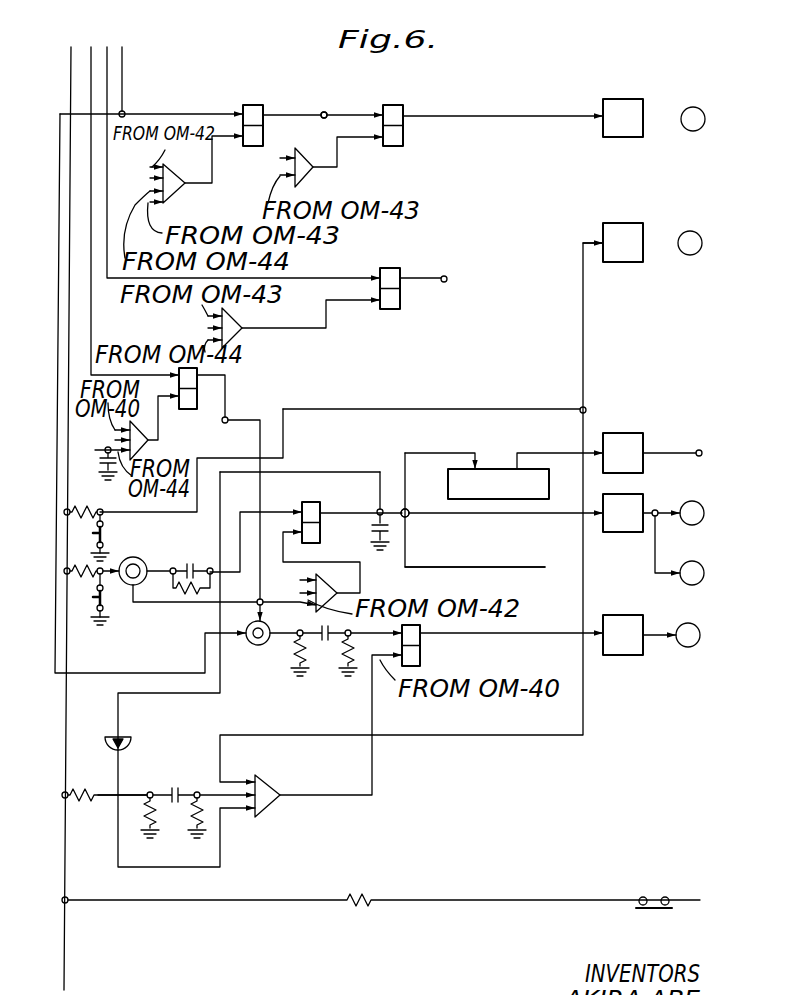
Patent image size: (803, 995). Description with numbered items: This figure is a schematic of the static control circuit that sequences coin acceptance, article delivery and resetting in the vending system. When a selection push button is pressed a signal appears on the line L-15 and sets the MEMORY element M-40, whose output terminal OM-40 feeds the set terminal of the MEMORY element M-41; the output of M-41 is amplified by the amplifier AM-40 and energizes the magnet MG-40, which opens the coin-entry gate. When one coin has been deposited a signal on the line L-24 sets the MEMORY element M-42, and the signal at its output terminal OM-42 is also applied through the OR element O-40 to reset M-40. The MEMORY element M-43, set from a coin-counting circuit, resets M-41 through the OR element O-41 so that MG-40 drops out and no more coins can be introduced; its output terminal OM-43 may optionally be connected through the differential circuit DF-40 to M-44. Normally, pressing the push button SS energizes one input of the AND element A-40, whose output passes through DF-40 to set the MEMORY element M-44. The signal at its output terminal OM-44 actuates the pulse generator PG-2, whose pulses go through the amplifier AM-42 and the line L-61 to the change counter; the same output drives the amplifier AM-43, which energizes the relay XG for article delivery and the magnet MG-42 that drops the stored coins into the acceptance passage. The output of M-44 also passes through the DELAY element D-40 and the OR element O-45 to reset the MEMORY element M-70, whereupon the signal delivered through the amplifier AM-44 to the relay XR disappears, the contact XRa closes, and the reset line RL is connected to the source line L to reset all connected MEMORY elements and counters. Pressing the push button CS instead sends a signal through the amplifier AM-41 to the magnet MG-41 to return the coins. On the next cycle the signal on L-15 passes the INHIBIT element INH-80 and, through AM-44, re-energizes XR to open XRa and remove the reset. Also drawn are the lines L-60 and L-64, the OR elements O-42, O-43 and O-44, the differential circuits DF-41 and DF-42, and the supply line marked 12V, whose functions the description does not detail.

The line L-60 is at (91, 70).
The line L-15 is at (122, 77).
The line L-24 is at (107, 100).
The source line L is at (71, 92).
The MEMORY element M-40 is at (272, 88).
The output of memory M-40 OM-40 is at (326, 111).
The MEMORY element M-41 is at (403, 137).
The OR element O-40 is at (200, 198).
The OR element O-41 is at (306, 178).
The amplifier AM-40 is at (626, 88).
The magnet MG-40 is at (690, 106).
The amplifier AM-41 is at (626, 212).
The magnet MG-41 is at (688, 231).
The MEMORY element M-42 is at (410, 258).
The output terminal OM-42 is at (447, 279).
The gate O-42 is at (235, 338).
The MEMORY element M-43 is at (185, 410).
The output terminal OM-43 is at (227, 417).
The gate O-43 is at (140, 450).
The MEMORY element M-44 is at (345, 498).
The output terminal OM-44 is at (409, 516).
The line L-64 is at (515, 568).
The pulse generator PG-2 is at (495, 468).
The amplifier AM-42 is at (643, 424).
The line L-61 is at (693, 455).
The amplifier AM-43 is at (643, 525).
The magnet MG-42 is at (690, 501).
The relay XG is at (690, 561).
The amplifier AM-44 is at (640, 655).
The relay XR is at (688, 610).
The gate O-44 is at (330, 585).
The MEMORY element M-70 is at (420, 650).
The push button CS is at (103, 524).
The push button SS is at (103, 612).
The AND element A-40 is at (136, 585).
The differential circuit DF-40 is at (190, 563).
The INHIBIT element INH-80 is at (262, 645).
The differentiator DF-42 is at (330, 648).
The DELAY element D-40 is at (125, 743).
The differentiator DF-41 is at (160, 800).
The OR element O-45 is at (270, 790).
The contact XRa is at (648, 898).
The reset line RL is at (150, 178).
The -12V supply 12V is at (70, 977).